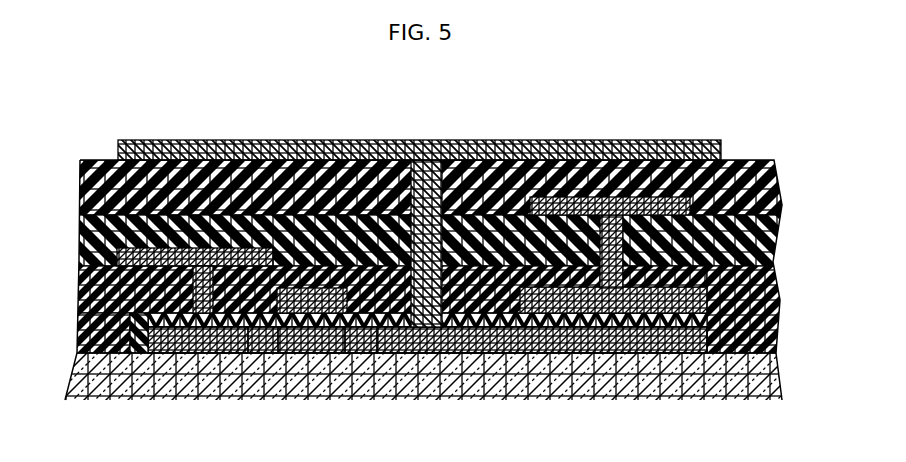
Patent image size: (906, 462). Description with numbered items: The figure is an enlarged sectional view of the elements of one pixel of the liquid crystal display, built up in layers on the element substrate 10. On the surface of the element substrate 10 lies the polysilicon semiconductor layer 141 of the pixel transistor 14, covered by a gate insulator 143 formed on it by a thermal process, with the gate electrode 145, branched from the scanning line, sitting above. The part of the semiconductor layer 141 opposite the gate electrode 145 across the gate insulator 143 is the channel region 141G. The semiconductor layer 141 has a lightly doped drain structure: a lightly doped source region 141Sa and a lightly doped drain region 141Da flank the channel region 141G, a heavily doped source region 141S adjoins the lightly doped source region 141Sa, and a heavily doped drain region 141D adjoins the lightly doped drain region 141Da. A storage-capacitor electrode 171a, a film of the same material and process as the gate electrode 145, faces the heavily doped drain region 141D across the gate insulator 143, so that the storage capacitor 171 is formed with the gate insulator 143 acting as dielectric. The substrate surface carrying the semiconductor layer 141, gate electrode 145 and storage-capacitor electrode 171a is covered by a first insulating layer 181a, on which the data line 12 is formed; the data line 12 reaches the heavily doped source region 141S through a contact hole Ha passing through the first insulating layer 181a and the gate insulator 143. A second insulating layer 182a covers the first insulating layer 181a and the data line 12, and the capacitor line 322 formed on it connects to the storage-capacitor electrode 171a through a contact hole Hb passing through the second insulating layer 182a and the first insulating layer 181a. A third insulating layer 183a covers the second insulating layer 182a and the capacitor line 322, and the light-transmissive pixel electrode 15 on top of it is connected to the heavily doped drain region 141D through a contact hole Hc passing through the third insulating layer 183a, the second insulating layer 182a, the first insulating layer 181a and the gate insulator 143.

The element substrate 10 is at (773, 395).
The data line 12 is at (133, 262).
The pixel transistor 14 is at (331, 261).
The pixel electrode 15 is at (497, 140).
The semiconductor layer 141 is at (140, 380).
The heavily doped source region 141S is at (177, 353).
The lightly doped source region 141Sa is at (250, 354).
The channel region 141G is at (307, 354).
The lightly doped drain region 141Da is at (367, 354).
The heavily doped drain region 141D is at (463, 354).
The gate insulator 143 is at (133, 337).
The gate electrode 145 is at (307, 293).
The storage capacitor 171 is at (620, 352).
The storage-capacitor electrode 171a is at (697, 300).
The first insulating layer 181a is at (773, 336).
The second insulating layer 182a is at (773, 245).
The third insulating layer 183a is at (773, 187).
The capacitor line 322 is at (688, 202).
The contact hole Ha is at (198, 295).
The contact hole Hb is at (603, 248).
The contact hole Hc is at (415, 192).